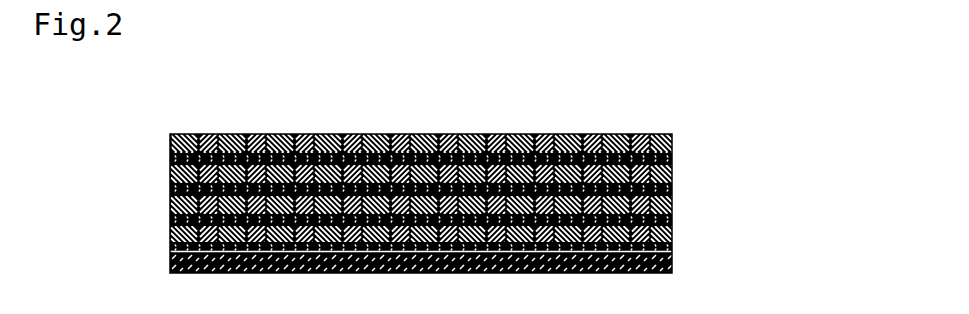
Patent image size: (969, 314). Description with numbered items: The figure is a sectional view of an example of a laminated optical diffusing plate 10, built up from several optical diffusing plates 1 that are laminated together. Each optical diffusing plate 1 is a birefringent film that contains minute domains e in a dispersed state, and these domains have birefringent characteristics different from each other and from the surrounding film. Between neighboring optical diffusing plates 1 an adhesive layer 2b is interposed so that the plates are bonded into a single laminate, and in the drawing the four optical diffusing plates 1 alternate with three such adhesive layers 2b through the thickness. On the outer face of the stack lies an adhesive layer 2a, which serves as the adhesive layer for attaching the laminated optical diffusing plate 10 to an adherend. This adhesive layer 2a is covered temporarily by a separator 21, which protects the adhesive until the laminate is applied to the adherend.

The laminated optical diffusing plate 10 is at (520, 198).
The optical diffusing plate 1 is at (672, 137).
The adhesive layer 2b is at (672, 158).
The adhesive layer 2a is at (672, 251).
The minute domains e is at (171, 150).
The separator 21 is at (171, 258).